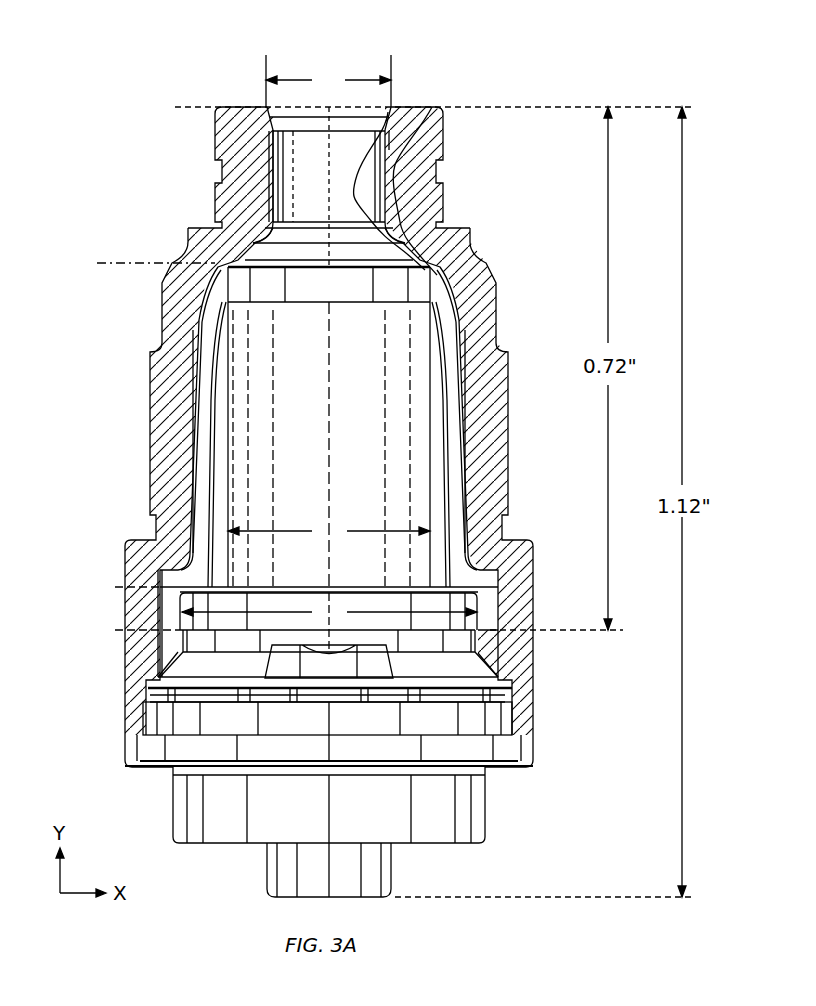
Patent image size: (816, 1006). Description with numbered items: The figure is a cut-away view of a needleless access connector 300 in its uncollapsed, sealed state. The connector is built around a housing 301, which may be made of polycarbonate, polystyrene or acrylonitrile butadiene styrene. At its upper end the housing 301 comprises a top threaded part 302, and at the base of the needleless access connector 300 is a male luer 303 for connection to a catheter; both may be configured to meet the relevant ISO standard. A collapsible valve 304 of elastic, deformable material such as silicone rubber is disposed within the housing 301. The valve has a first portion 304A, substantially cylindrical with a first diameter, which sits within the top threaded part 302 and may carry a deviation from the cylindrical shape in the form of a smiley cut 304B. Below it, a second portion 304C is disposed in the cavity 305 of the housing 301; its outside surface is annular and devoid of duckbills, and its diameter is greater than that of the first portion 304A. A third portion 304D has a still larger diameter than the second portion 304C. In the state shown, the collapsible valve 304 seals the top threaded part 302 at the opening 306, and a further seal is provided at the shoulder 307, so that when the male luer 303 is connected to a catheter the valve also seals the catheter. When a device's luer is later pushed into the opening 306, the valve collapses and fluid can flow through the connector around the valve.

The needleless access connector 300 is at (117, 107).
The housing 301 is at (500, 306).
The top threaded part 302 is at (477, 118).
The male luer 303 is at (482, 795).
The collapsible valve 304 is at (430, 478).
The first portion 304A is at (183, 105).
The smiley cut 304B is at (418, 125).
The second portion 304C is at (118, 275).
The third portion 304D is at (120, 592).
The cavity 305 is at (455, 422).
The opening 306 is at (392, 48).
The shoulder 307 is at (247, 246).